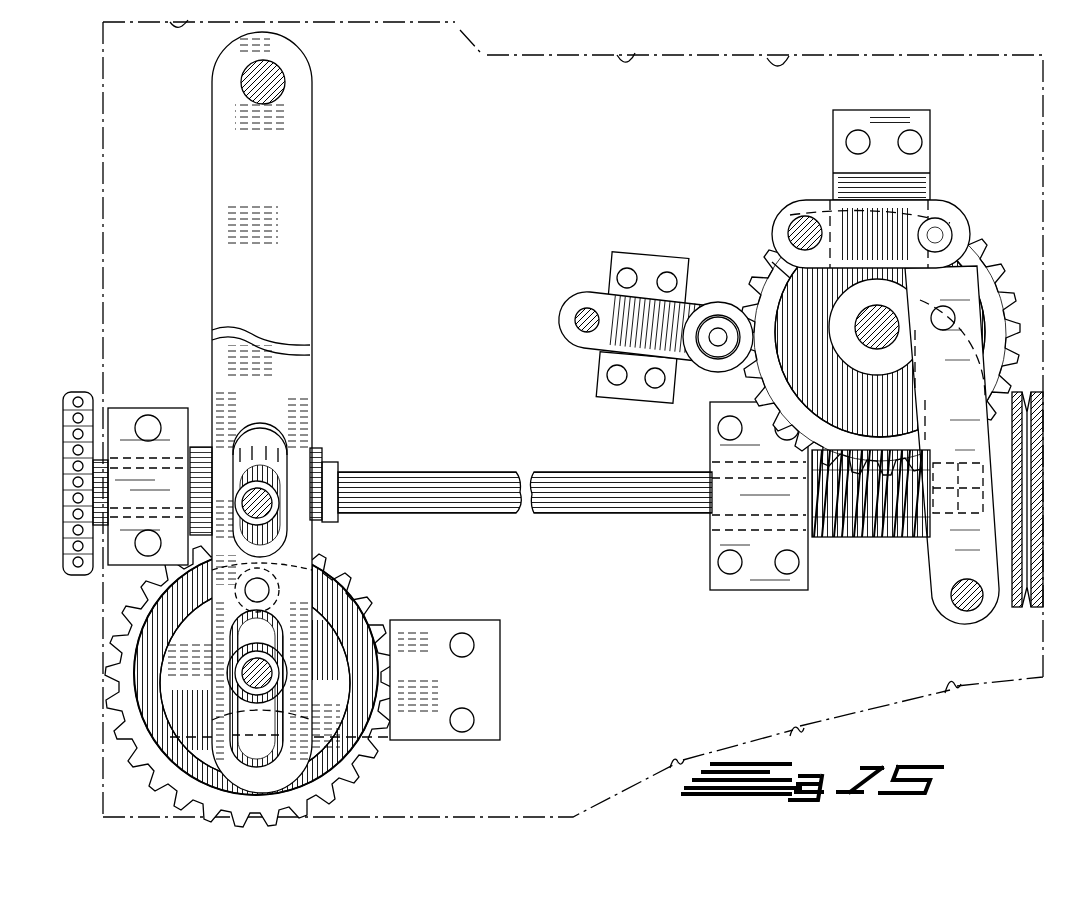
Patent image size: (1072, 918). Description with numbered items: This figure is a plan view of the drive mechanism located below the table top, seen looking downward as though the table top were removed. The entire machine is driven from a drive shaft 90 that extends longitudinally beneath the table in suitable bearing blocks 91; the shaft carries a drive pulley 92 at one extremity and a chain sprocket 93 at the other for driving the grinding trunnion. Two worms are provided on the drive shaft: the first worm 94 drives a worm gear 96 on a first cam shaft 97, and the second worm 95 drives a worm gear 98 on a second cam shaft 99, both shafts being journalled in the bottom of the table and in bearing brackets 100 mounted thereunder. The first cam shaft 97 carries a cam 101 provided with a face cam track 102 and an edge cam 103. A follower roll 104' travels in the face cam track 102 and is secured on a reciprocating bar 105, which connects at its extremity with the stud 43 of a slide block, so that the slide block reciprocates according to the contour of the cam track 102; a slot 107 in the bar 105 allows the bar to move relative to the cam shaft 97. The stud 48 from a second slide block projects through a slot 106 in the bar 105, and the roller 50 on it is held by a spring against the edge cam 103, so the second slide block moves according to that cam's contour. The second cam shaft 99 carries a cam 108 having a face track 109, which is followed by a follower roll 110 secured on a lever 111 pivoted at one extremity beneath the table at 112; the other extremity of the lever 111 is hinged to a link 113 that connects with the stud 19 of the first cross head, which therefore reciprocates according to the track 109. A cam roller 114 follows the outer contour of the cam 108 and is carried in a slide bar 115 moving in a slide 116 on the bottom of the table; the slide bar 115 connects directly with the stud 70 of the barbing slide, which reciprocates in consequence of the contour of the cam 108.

The stud 19 is at (812, 230).
The stud 43 is at (285, 86).
The stud 48 is at (332, 468).
The roller 50 is at (275, 462).
The stud 70 is at (573, 321).
The drive shaft 90 is at (440, 478).
The bearing blocks 91 is at (165, 425).
The drive pulley 92 is at (1023, 603).
The chain sprocket 93 is at (83, 393).
The worm 94 is at (318, 458).
The worm 95 is at (872, 518).
The worm gear 96 is at (85, 578).
The cam shaft 97 is at (240, 683).
The worm gear 98 is at (1003, 287).
The cam shaft 99 is at (873, 340).
The bearing brackets 100 is at (480, 693).
The cam 101 is at (333, 583).
The face cam track 102 is at (337, 633).
The edge cam 103 is at (330, 788).
The follower roll 104' is at (300, 569).
The reciprocating bar 105 is at (293, 270).
The slot 106 is at (265, 432).
The slot 107 is at (247, 740).
The cam 108 is at (752, 360).
The face track 109 is at (790, 277).
The follower roll 110 is at (988, 263).
The lever 111 is at (947, 570).
The pivot 112 is at (967, 597).
The link 113 is at (903, 215).
The cam roller 114 is at (718, 305).
The slide bar 115 is at (612, 338).
The slide 116 is at (603, 380).